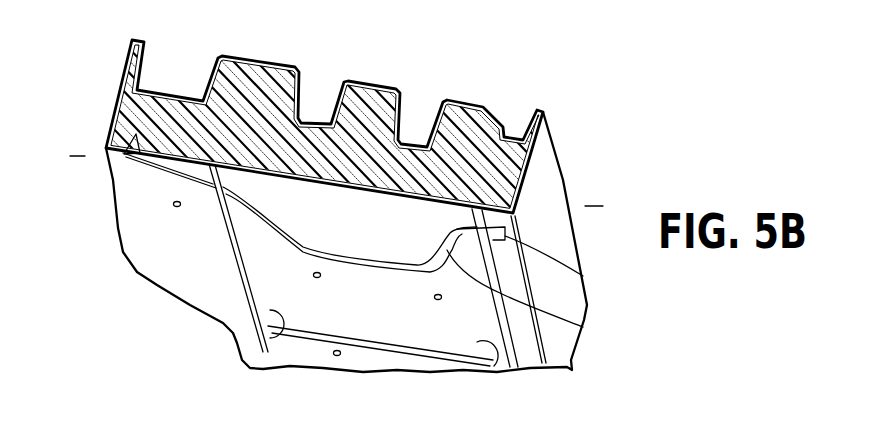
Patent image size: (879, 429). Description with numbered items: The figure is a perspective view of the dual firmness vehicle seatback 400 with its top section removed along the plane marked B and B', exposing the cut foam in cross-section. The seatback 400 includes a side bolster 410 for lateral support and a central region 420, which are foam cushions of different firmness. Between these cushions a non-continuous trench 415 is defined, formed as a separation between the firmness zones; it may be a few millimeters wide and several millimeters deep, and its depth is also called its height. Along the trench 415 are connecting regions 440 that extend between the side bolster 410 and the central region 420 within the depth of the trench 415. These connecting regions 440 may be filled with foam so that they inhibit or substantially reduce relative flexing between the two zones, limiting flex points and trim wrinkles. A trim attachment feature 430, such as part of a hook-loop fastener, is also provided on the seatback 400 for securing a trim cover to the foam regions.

The vehicle seatback 400 is at (552, 58).
The side bolster 410 is at (183, 251).
The non-continuous trench 415 is at (237, 233).
The central region 420 is at (300, 272).
The trim attachment feature 430 is at (583, 327).
The connecting region 440 is at (192, 138).